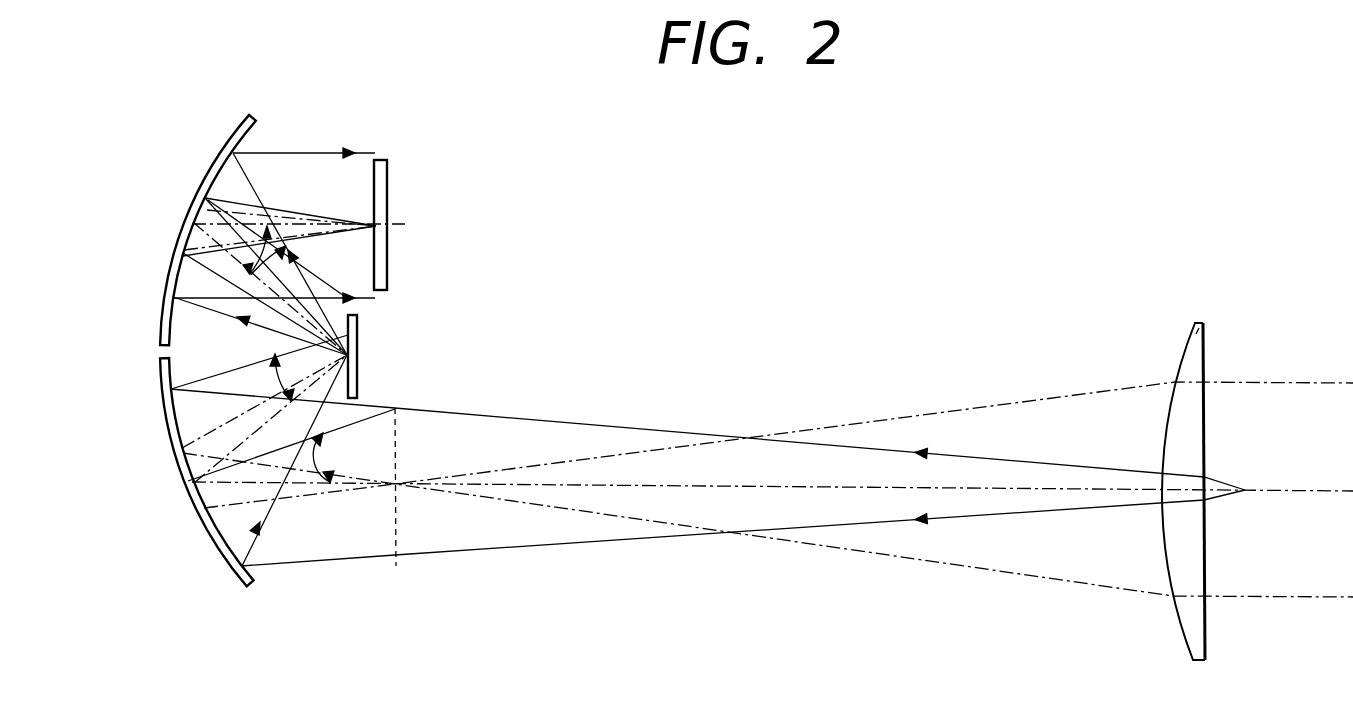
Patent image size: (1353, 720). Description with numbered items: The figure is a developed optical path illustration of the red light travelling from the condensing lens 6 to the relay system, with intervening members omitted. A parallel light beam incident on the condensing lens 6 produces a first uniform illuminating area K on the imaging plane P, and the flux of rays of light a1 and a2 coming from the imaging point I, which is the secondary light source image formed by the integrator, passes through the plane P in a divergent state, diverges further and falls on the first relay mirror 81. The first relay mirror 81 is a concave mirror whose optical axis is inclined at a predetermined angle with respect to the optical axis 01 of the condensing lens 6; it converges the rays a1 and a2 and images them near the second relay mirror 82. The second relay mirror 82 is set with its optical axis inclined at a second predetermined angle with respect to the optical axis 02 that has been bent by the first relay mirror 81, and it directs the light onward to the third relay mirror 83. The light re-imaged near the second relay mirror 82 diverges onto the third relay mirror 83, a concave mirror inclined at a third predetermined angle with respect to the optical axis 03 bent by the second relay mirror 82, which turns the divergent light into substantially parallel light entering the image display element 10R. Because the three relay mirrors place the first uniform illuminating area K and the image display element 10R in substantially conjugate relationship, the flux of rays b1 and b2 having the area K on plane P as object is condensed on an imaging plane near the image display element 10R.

The image display element 10R is at (388, 180).
The optical axis bent by the second relay mirror 03 is at (236, 242).
The third relay mirror 83 is at (161, 318).
The second relay mirror 82 is at (358, 345).
The optical axis bent by the first relay mirror 02 is at (238, 434).
The first relay mirror 81 is at (224, 563).
The condensing lens 6 is at (1199, 326).
The imaging point I is at (1249, 488).
The ray of light a1 is at (1020, 463).
The ray of light a2 is at (1020, 510).
The optical axis of the condensing lens 01 is at (630, 488).
The first uniform illuminating area K is at (396, 520).
The imaging plane P is at (395, 572).
The ray of light b1 is at (317, 474).
The ray of light b2 is at (295, 494).